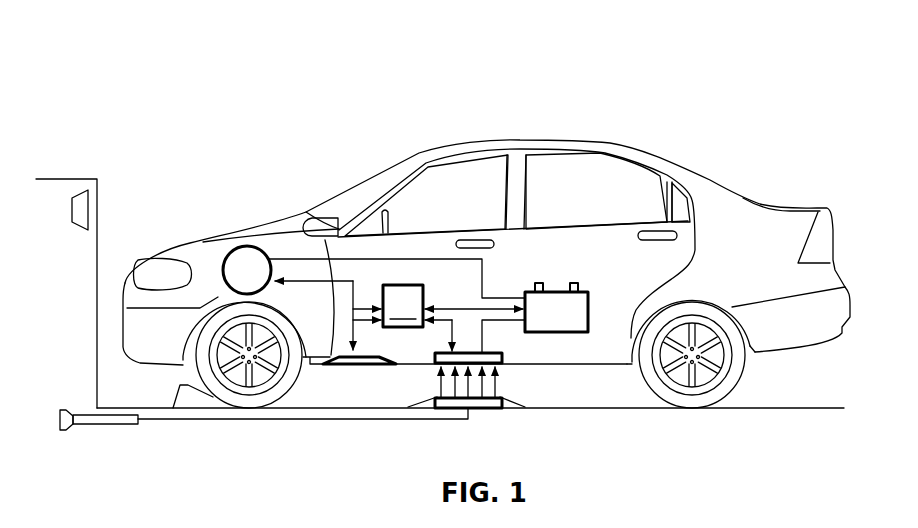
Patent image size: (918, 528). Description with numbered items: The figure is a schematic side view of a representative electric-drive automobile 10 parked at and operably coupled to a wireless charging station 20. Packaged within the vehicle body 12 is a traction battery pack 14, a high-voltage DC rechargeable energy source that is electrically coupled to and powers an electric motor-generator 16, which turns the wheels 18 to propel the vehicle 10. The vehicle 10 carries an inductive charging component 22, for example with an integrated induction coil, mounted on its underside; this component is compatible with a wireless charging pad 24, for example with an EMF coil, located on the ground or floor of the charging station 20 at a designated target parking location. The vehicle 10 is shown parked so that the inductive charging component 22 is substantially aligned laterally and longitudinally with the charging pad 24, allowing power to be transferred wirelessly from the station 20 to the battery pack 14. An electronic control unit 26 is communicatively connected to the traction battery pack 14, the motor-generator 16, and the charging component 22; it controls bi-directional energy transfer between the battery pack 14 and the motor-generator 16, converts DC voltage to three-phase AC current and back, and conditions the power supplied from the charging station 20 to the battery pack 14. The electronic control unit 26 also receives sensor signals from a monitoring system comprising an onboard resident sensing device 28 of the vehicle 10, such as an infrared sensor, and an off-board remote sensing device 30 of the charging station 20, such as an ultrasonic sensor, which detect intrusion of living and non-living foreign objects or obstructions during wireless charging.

The automobile 10 is at (265, 97).
The vehicle body 12 is at (438, 133).
The traction battery pack 14 is at (570, 332).
The electric motor-generator 16 is at (261, 246).
The wheels 18 is at (247, 408).
The wireless charging station 20 is at (108, 156).
The inductive charging component 22 is at (423, 364).
The wireless charging pad 24 is at (488, 409).
The electronic control unit 26 is at (438, 315).
The resident sensing device 28 is at (358, 367).
The remote sensing device 30 is at (82, 190).